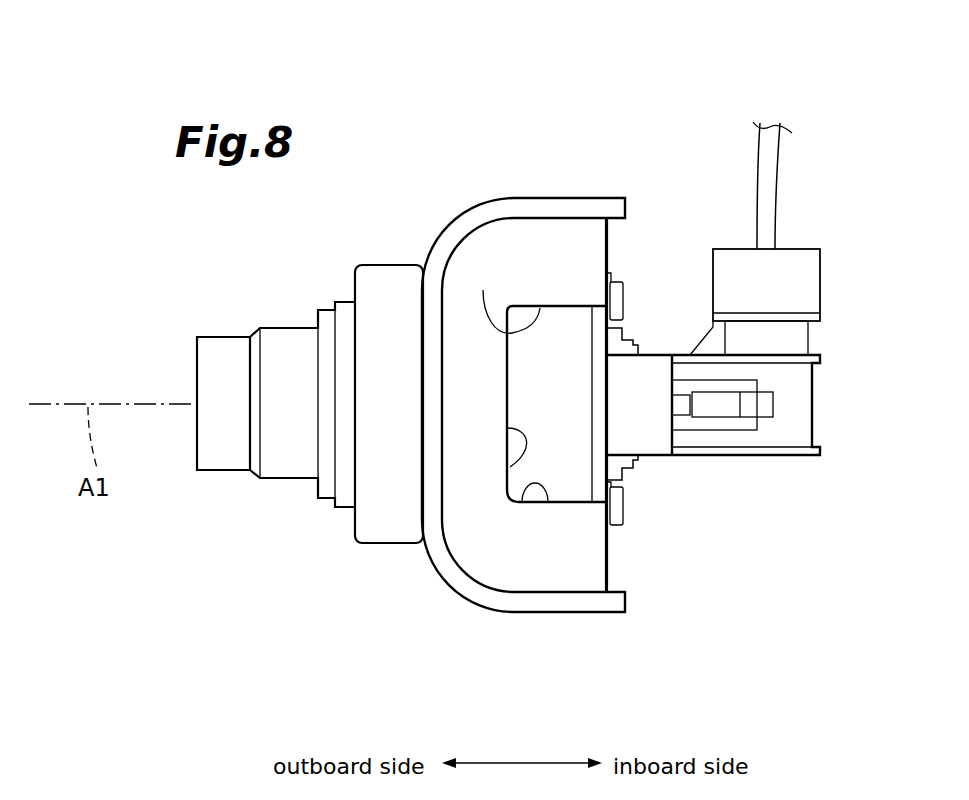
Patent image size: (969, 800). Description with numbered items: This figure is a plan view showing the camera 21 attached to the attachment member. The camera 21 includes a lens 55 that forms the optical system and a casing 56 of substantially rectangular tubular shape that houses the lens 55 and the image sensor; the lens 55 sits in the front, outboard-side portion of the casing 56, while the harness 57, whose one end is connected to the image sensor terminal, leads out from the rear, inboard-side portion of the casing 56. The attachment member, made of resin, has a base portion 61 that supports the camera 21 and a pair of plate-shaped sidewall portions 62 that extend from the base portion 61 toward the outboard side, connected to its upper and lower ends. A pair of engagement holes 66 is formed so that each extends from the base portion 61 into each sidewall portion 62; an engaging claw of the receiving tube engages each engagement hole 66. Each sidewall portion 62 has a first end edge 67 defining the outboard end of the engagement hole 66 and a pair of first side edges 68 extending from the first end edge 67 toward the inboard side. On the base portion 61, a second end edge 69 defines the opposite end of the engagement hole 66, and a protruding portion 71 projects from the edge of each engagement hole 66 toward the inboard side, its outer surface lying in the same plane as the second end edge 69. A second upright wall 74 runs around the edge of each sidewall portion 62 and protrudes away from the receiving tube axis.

The camera 21 is at (222, 473).
The lens 55 is at (197, 368).
The casing 56 is at (388, 282).
The harness 57 is at (772, 210).
The base portion 61 is at (598, 320).
The sidewall portion 62 is at (575, 573).
The engagement hole 66 is at (560, 396).
The first end edge 67 is at (520, 432).
The first side edges 68 is at (483, 290).
The second end edge 69 is at (598, 495).
The protruding portion 71 is at (648, 428).
The second upright wall 74 is at (543, 210).